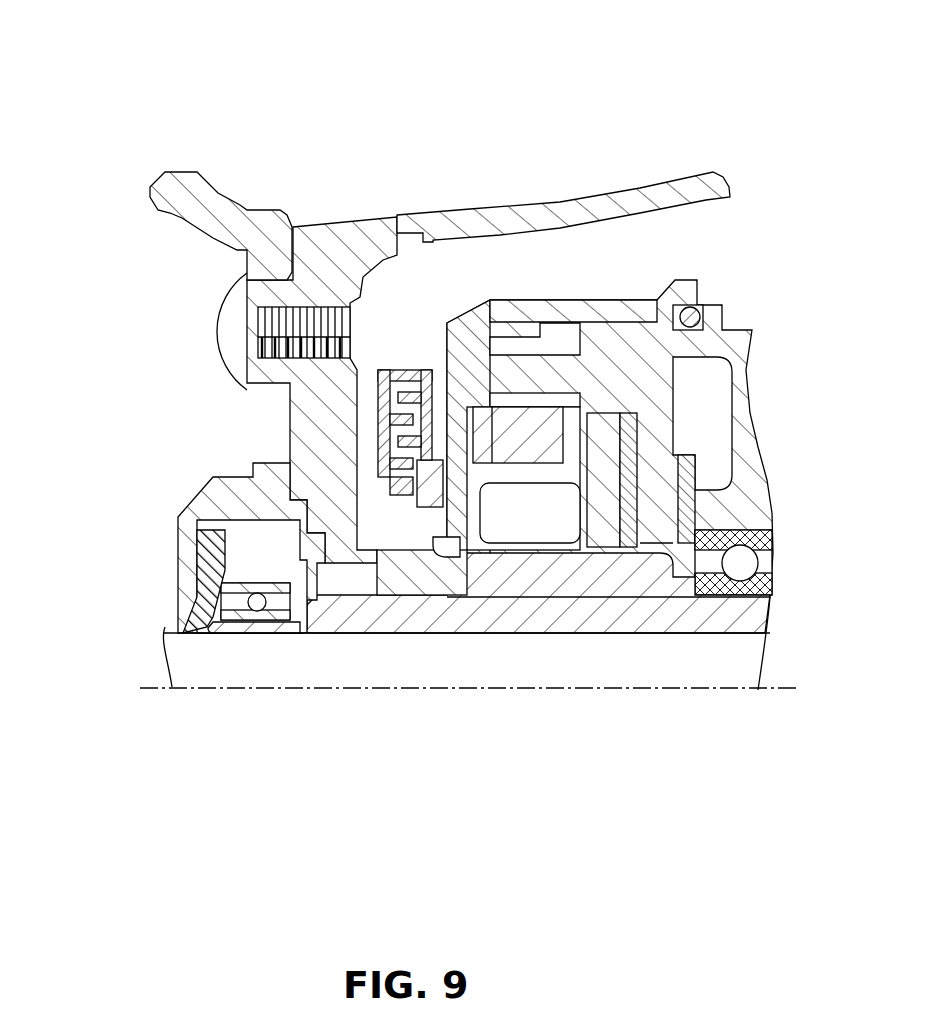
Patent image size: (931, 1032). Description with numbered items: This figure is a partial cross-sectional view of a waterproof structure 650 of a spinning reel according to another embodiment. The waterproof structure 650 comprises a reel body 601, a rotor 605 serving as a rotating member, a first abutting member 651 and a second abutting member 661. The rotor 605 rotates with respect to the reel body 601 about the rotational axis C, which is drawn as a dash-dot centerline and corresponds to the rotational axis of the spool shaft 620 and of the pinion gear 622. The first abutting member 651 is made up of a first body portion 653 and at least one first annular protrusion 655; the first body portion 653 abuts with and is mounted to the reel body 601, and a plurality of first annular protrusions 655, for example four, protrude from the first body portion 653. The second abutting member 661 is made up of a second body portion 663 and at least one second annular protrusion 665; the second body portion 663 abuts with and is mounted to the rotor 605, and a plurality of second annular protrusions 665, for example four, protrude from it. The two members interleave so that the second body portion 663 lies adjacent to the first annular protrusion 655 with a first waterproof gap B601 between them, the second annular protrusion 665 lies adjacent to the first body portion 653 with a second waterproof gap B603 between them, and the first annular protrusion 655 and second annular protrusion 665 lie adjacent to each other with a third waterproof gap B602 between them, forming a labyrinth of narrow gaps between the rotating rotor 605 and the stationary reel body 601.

The rotor 605 is at (681, 180).
The waterproof structure 650 is at (408, 277).
The reel body 601 is at (463, 308).
The third waterproof gap B602 is at (406, 392).
The first waterproof gap B601 is at (392, 473).
The second waterproof gap B603 is at (415, 457).
The second abutting member 661 is at (211, 493).
The second annular protrusion 665 is at (393, 363).
The second body portion 663 is at (371, 551).
The pinion gear 622 is at (742, 627).
The spool shaft 620 is at (727, 665).
The first abutting member 651 is at (436, 656).
The first annular protrusion 655 is at (403, 483).
The first body portion 653 is at (425, 527).